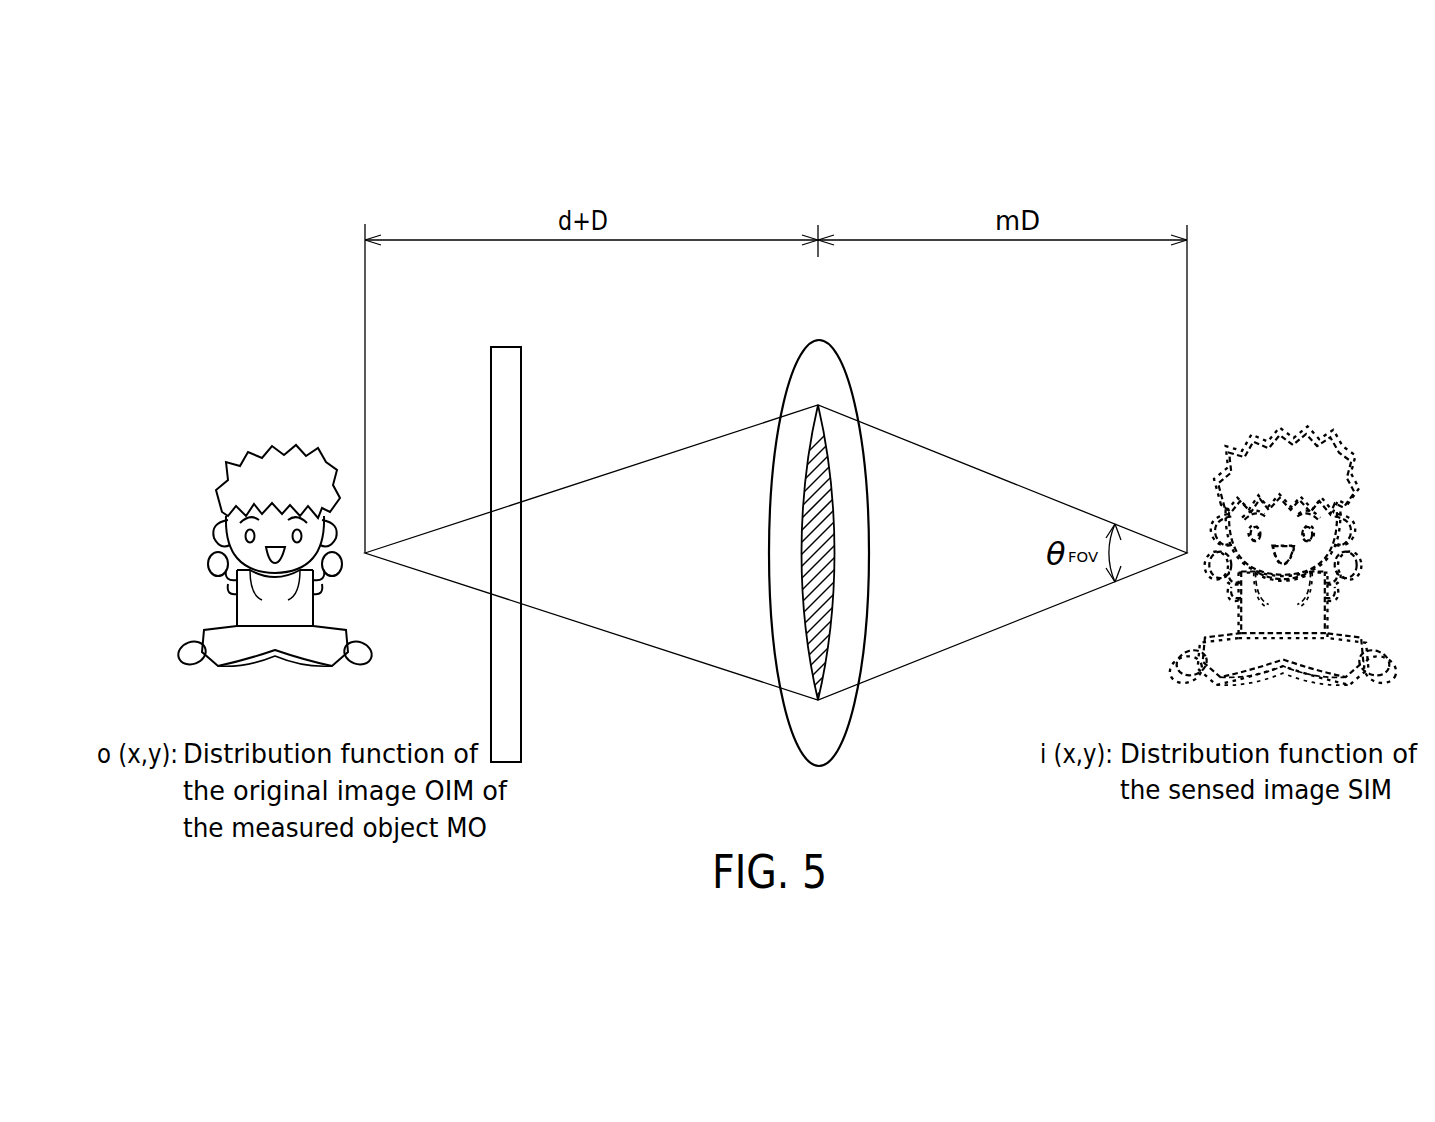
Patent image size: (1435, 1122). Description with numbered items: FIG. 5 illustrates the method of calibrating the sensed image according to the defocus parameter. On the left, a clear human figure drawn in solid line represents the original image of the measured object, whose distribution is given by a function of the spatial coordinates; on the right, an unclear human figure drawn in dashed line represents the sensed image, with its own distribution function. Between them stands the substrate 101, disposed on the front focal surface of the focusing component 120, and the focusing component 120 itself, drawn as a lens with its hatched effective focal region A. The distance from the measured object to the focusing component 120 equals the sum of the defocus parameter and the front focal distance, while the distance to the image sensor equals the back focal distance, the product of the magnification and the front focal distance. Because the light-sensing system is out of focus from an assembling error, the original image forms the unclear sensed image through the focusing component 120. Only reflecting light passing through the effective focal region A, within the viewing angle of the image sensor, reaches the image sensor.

The substrate 101 is at (505, 347).
The focusing component 120 is at (818, 340).
The effective focal region A is at (808, 428).